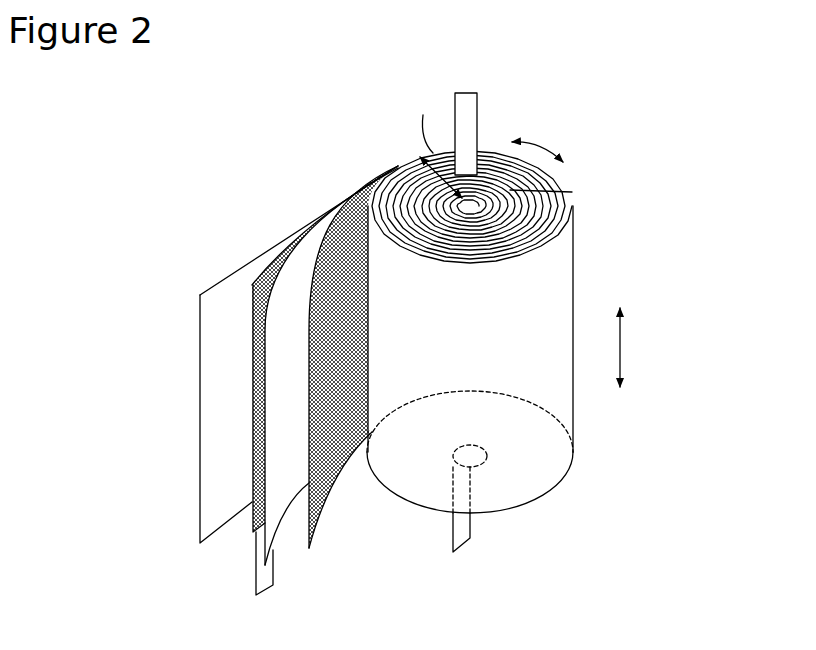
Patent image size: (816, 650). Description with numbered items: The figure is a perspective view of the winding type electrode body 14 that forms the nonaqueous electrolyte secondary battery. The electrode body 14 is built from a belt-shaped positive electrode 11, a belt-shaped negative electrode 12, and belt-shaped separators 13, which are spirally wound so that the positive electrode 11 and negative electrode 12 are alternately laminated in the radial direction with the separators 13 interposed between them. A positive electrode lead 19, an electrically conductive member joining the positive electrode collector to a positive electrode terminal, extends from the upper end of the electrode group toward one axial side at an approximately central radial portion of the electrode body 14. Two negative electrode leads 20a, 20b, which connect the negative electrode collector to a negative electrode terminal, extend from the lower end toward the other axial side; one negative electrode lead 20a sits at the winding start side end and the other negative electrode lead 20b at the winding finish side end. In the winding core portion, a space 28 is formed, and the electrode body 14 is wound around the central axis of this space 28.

The positive electrode 11 is at (342, 193).
The negative electrode 12 is at (268, 273).
The separators 13 is at (287, 387).
The electrode body 14 is at (562, 88).
The positive electrode lead 19 is at (467, 102).
The negative electrode lead 20a is at (467, 538).
The negative electrode lead 20b is at (267, 587).
The space 28 is at (572, 192).